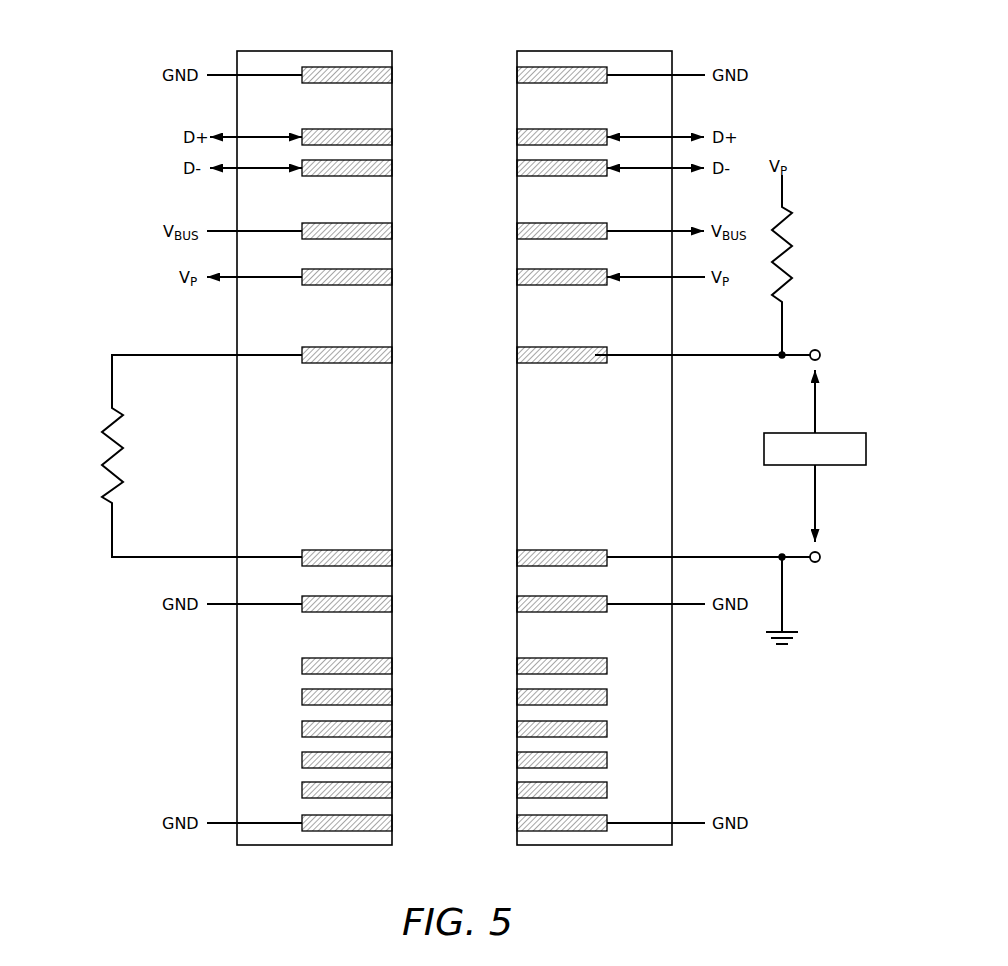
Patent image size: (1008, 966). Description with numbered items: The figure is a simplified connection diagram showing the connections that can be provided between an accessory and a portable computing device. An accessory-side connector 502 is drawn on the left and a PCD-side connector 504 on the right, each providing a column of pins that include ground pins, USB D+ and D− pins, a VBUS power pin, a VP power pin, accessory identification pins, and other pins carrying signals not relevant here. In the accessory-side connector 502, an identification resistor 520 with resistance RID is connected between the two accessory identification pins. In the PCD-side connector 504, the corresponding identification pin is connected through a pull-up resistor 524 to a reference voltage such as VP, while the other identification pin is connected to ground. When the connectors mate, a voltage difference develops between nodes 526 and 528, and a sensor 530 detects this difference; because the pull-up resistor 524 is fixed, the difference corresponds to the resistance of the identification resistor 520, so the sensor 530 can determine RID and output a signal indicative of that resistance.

The accessory-side connector 502 is at (318, 50).
The PCD-side connector 504 is at (597, 50).
The identification resistor 520 is at (112, 424).
The pull-up resistor 524 is at (786, 240).
The node 526 is at (815, 349).
The node 528 is at (818, 563).
The sensor 530 is at (796, 434).